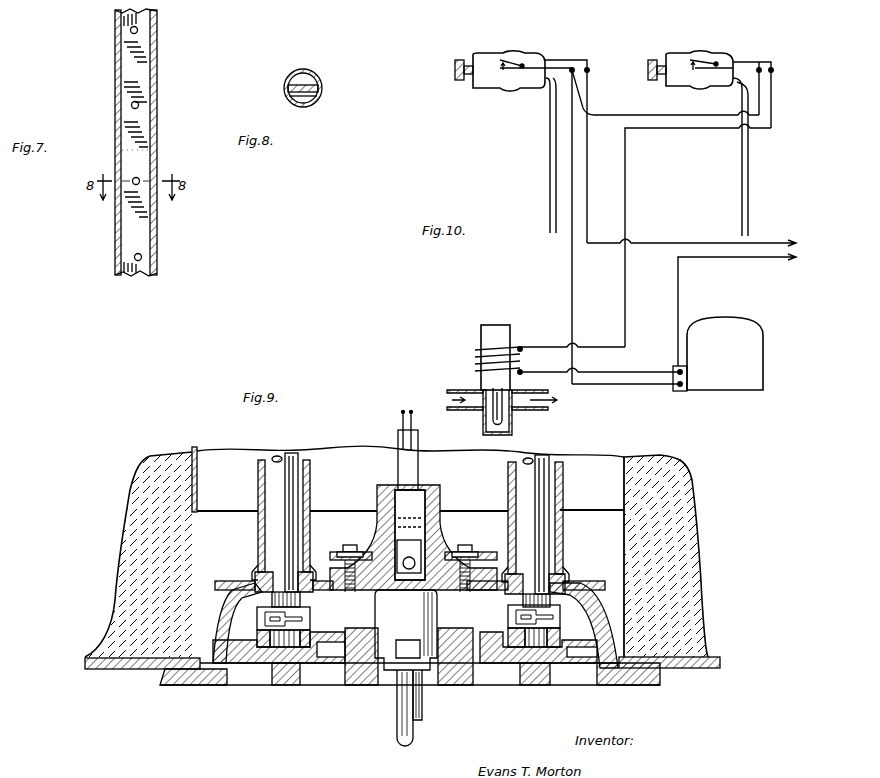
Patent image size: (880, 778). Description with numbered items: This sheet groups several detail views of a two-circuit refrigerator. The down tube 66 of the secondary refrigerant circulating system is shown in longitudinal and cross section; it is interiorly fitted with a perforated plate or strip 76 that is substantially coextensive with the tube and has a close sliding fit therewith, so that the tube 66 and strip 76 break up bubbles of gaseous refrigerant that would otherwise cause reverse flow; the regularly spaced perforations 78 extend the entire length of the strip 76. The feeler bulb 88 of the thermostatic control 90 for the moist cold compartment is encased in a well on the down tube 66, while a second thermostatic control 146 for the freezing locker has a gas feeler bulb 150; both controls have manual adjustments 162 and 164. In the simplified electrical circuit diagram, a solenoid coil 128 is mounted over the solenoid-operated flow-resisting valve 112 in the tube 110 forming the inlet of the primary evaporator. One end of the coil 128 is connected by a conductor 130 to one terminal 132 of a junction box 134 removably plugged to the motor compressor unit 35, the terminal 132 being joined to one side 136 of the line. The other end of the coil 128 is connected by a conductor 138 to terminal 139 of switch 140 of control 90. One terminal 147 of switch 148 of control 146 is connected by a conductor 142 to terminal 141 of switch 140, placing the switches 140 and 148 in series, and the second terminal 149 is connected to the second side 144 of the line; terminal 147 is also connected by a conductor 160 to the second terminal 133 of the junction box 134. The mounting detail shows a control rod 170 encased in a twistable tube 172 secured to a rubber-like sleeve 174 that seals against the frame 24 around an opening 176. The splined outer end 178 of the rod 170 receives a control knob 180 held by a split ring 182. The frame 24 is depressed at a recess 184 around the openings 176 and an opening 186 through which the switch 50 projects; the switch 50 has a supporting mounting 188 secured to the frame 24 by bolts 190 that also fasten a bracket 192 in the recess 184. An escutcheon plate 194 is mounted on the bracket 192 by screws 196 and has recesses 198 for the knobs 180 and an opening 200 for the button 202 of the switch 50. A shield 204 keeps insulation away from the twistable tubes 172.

In FIG. 7, the down tube 66 is at (157, 125).
In FIG. 8, the down tube 66 is at (297, 71).
In FIG. 7, the perforated plate or strip 76 is at (135, 75).
In FIG. 8, the perforated plate or strip 76 is at (318, 84).
In FIG. 7, the holes 78 is at (138, 30).
In FIG. 8, the holes 78 is at (318, 96).
In FIG. 10, the second thermostatic control 146 is at (492, 60).
In FIG. 10, the switch 148 is at (515, 52).
In FIG. 10, the terminal 147 is at (572, 68).
In FIG. 10, the second terminal 149 is at (587, 68).
In FIG. 10, the thermostatic control 90 is at (678, 60).
In FIG. 10, the switch 140 is at (704, 56).
In FIG. 10, the terminal 141 is at (760, 68).
In FIG. 10, the terminal 139 is at (772, 70).
In FIG. 10, the manual adjustment 164 is at (448, 80).
In FIG. 9, the manual adjustment 164 is at (528, 460).
In FIG. 10, the manual adjustment 162 is at (645, 81).
In FIG. 9, the manual adjustment 162 is at (398, 440).
In FIG. 10, the conductor 142 is at (686, 112).
In FIG. 10, the conductor 138 is at (672, 130).
In FIG. 10, the feeler bulb 88 is at (750, 163).
In FIG. 10, the gas feeler bulb 150 is at (549, 162).
In FIG. 10, the second side of the line 144 is at (692, 243).
In FIG. 10, the conductor 160 is at (572, 276).
In FIG. 10, the one side of the line 136 is at (706, 257).
In FIG. 10, the solenoid coil 128 is at (481, 348).
In FIG. 10, the tube 110 is at (456, 394).
In FIG. 10, the solenoid-operated flow-resisting valve 112 is at (508, 412).
In FIG. 10, the conductor 130 is at (578, 376).
In FIG. 10, the terminal 132 is at (679, 373).
In FIG. 10, the second terminal 133 is at (682, 386).
In FIG. 10, the junction box 134 is at (676, 392).
In FIG. 10, the motor compressor unit 35 is at (735, 361).
In FIG. 9, the frame 24 is at (118, 670).
In FIG. 9, the shield 204 is at (196, 462).
In FIG. 9, the control rod 170 is at (291, 460).
In FIG. 9, the twistable tube 172 is at (258, 492).
In FIG. 9, the sleeve 174 is at (257, 565).
In FIG. 9, the opening 176 is at (255, 580).
In FIG. 9, the split ring 182 is at (264, 616).
In FIG. 9, the recess 184 is at (215, 622).
In FIG. 9, the outer end of the rod 178 is at (248, 663).
In FIG. 9, the recesses 198 is at (256, 683).
In FIG. 9, the control knob 180 is at (284, 650).
In FIG. 9, the screws 196 is at (316, 648).
In FIG. 9, the escutcheon plate 194 is at (372, 661).
In FIG. 9, the supporting mounting 188 is at (376, 495).
In FIG. 9, the bolts 190 is at (350, 544).
In FIG. 9, the opening 186 is at (384, 597).
In FIG. 9, the switch 50 is at (420, 630).
In FIG. 9, the opening 200 is at (422, 680).
In FIG. 9, the button 202 is at (402, 718).
In FIG. 9, the bracket 192 is at (462, 630).